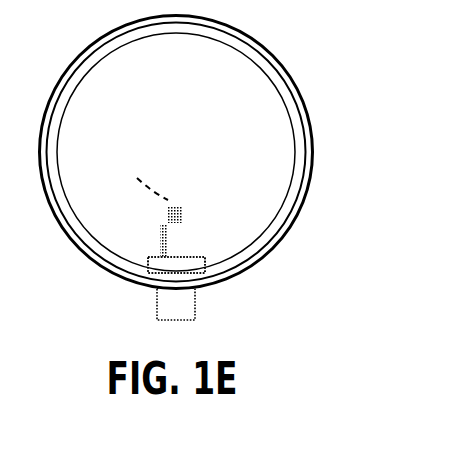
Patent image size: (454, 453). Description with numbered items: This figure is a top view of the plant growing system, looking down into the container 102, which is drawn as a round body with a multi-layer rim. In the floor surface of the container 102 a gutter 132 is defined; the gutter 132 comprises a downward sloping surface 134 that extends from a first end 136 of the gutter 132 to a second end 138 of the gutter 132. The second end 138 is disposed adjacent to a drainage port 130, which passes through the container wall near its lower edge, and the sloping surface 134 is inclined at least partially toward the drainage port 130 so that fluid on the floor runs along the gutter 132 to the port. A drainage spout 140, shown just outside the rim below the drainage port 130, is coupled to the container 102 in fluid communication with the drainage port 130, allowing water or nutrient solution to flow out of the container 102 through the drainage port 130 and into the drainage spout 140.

The container 102 is at (318, 115).
The drainage port 130 is at (155, 268).
The gutter 132 is at (141, 175).
The downward sloping surface 134 is at (177, 240).
The first end of the gutter 136 is at (179, 201).
The second end of the gutter 138 is at (186, 249).
The drainage spout 140 is at (201, 298).